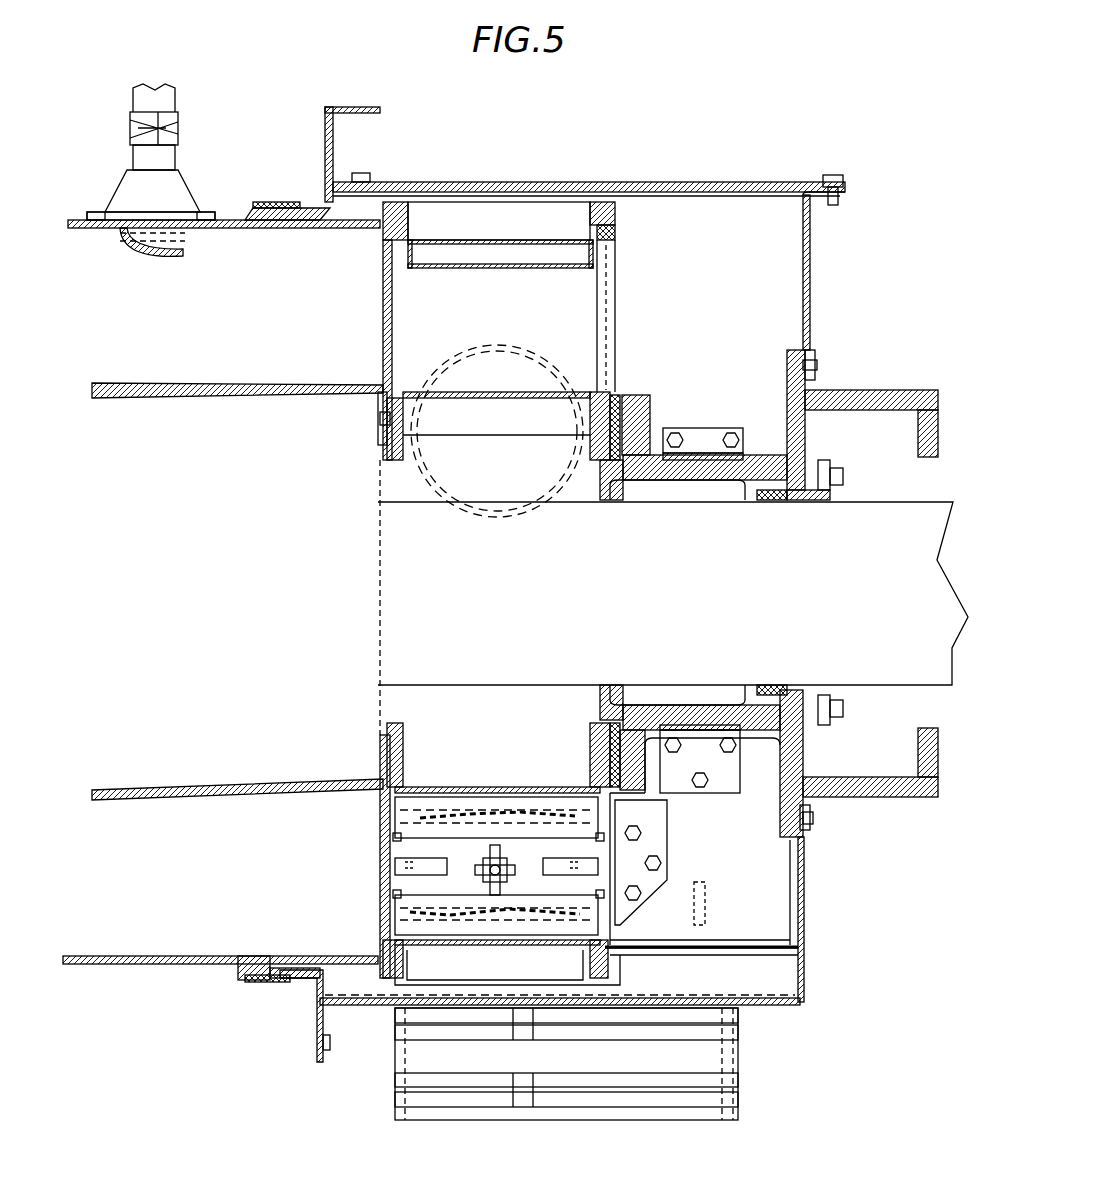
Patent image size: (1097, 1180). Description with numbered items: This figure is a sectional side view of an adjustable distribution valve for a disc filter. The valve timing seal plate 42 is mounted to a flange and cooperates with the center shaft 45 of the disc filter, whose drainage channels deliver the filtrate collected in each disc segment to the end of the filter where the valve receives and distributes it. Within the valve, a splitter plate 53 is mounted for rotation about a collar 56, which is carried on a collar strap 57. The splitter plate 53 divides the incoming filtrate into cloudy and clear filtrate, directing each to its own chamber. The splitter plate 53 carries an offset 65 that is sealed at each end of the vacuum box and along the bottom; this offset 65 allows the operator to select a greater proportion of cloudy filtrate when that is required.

The valve timing seal plate 42 is at (392, 325).
The collar strap 57 is at (758, 381).
The collar 56 is at (890, 500).
The splitter plate 53 is at (465, 797).
The offset 65 is at (790, 907).
The center shaft 45 is at (155, 964).